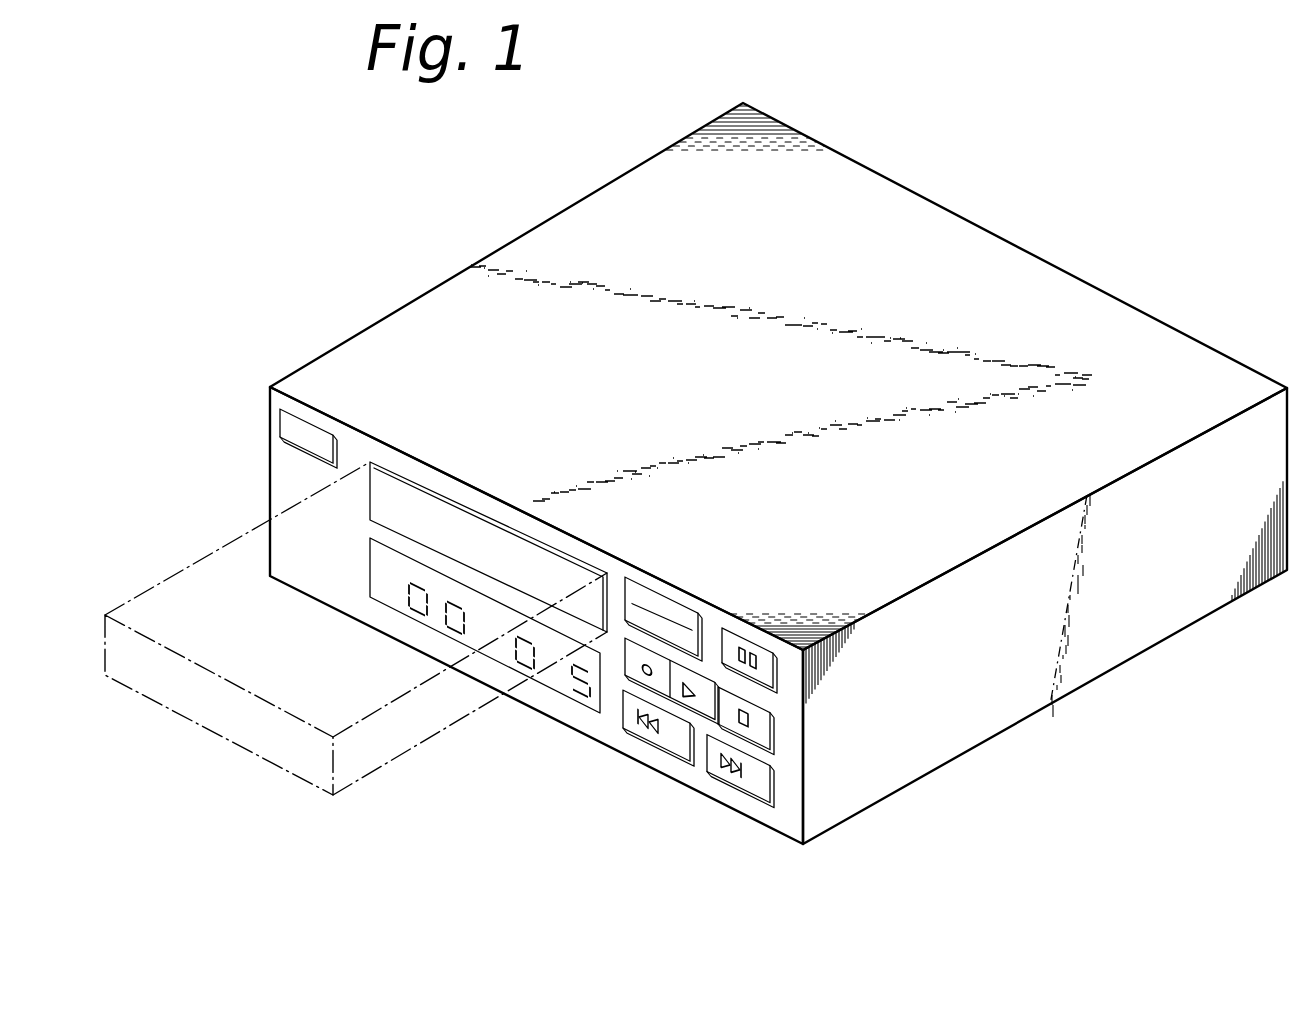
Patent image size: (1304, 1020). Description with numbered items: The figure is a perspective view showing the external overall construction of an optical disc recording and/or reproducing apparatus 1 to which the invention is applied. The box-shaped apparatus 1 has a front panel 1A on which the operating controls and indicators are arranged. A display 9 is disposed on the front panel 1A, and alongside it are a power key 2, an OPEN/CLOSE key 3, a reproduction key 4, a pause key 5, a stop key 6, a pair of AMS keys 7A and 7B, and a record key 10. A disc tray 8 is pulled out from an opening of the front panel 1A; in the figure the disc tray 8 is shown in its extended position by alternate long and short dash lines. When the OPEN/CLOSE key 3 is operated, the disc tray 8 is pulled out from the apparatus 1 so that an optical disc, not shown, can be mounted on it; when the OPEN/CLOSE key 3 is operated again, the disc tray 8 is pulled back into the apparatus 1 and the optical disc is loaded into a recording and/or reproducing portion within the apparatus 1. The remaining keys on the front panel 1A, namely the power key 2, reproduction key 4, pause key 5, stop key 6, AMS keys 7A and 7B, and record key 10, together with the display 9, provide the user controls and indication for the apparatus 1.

The optical disc recording and/or reproducing apparatus 1 is at (734, 473).
The front panel 1A is at (277, 472).
The power key 2 is at (278, 420).
The OPEN/CLOSE key 3 is at (660, 582).
The reproduction key 4 is at (706, 680).
The pause key 5 is at (780, 667).
The stop key 6 is at (775, 730).
The AMS key 7A is at (658, 747).
The AMS key 7B is at (743, 790).
The disc tray 8 is at (477, 523).
The display 9 is at (502, 653).
The record key 10 is at (624, 684).